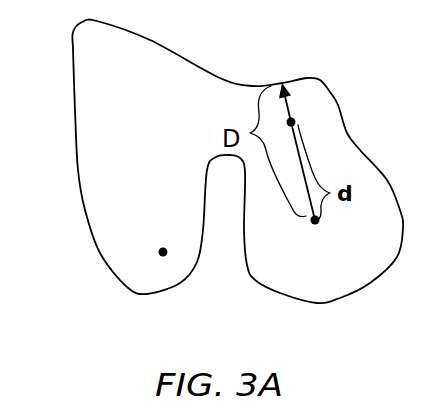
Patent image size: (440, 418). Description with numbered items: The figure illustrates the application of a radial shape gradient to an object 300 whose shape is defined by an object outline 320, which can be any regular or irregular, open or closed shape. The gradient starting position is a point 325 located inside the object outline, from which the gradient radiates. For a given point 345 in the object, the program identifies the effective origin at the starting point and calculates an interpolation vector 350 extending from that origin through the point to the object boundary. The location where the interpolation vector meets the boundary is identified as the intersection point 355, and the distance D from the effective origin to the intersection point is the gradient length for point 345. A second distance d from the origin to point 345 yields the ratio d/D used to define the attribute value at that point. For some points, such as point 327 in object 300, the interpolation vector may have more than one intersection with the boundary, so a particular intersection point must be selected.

The object 300 is at (214, 190).
The object outline 320 is at (72, 106).
The point 325 is at (318, 221).
The point 327 is at (160, 252).
The point 345 is at (291, 122).
The interpolation vector 350 is at (309, 203).
The intersection point 355 is at (282, 83).